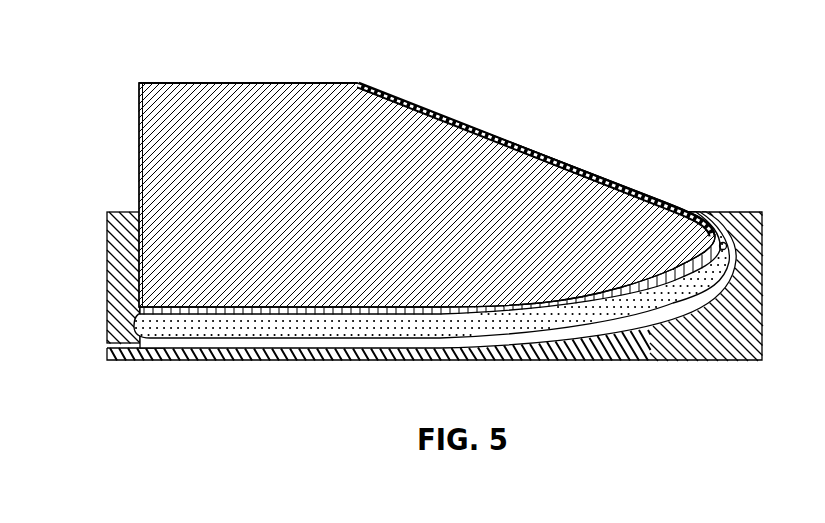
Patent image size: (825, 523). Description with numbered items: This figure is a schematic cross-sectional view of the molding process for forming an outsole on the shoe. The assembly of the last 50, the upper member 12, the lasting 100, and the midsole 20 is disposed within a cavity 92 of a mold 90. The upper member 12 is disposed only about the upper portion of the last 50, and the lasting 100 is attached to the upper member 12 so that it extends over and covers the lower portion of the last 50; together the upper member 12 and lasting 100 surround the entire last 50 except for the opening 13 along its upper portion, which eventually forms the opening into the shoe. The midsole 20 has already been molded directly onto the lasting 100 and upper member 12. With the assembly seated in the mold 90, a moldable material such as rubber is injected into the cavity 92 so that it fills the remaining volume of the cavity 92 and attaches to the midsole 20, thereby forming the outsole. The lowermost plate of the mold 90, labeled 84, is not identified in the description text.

The opening 13 is at (189, 77).
The last 50 is at (234, 83).
The upper member 12 is at (428, 111).
The lasting 100 is at (727, 244).
The mold 90 is at (400, 309).
The base plate 84 is at (113, 360).
The midsole 20 is at (233, 343).
The cavity 92 is at (650, 333).